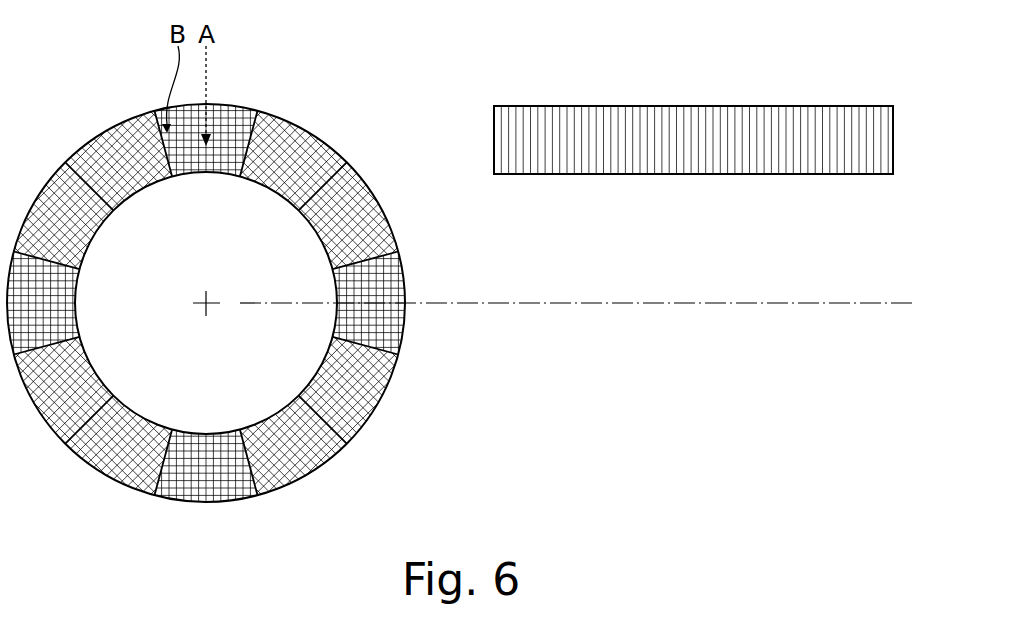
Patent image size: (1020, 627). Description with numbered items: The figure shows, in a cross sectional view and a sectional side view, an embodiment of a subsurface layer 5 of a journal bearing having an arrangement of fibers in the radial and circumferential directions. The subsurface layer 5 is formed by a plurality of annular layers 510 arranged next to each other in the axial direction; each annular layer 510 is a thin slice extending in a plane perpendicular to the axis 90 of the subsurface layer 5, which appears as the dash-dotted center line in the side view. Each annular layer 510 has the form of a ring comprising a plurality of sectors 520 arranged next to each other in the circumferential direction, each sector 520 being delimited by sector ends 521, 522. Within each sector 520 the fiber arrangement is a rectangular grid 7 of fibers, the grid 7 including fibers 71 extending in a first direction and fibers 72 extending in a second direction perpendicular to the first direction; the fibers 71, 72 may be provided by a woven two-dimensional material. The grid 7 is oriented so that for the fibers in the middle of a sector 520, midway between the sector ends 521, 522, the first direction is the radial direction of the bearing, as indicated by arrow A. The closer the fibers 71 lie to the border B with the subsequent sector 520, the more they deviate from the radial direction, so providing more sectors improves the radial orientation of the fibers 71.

The subsurface layer 5 is at (450, 260).
The annular layer 510 is at (118, 119).
The sector 520 is at (300, 128).
The sector end 521 is at (258, 128).
The sector end 522 is at (332, 167).
The rectangular grid of fibers 7 is at (357, 392).
The fibers extending in a first direction 71 is at (383, 318).
The fibers extending in a second direction 72 is at (373, 277).
The axis 90 is at (690, 305).